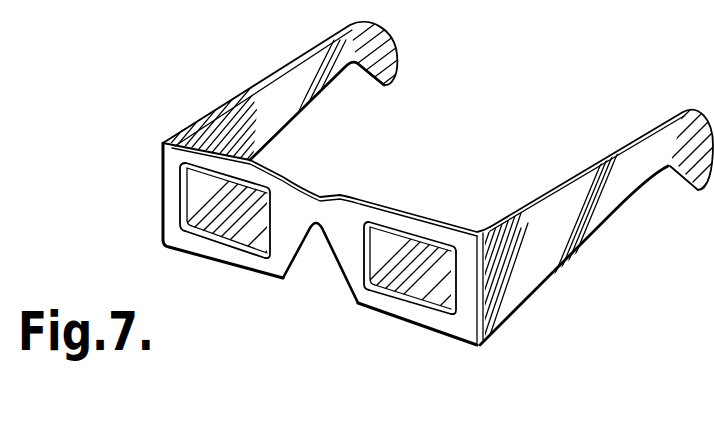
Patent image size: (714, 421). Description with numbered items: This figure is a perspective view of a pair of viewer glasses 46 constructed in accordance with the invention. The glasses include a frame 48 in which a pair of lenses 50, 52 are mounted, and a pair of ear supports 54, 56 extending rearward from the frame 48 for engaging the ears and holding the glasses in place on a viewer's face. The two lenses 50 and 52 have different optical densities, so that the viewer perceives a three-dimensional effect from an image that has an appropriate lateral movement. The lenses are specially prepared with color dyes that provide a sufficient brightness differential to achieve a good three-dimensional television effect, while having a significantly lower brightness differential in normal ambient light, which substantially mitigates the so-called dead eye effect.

The viewer glasses 46 is at (578, 281).
The frame 48 is at (345, 296).
The lens 50 is at (187, 183).
The lens 52 is at (407, 247).
The ear support 54 is at (273, 72).
The ear support 56 is at (620, 151).